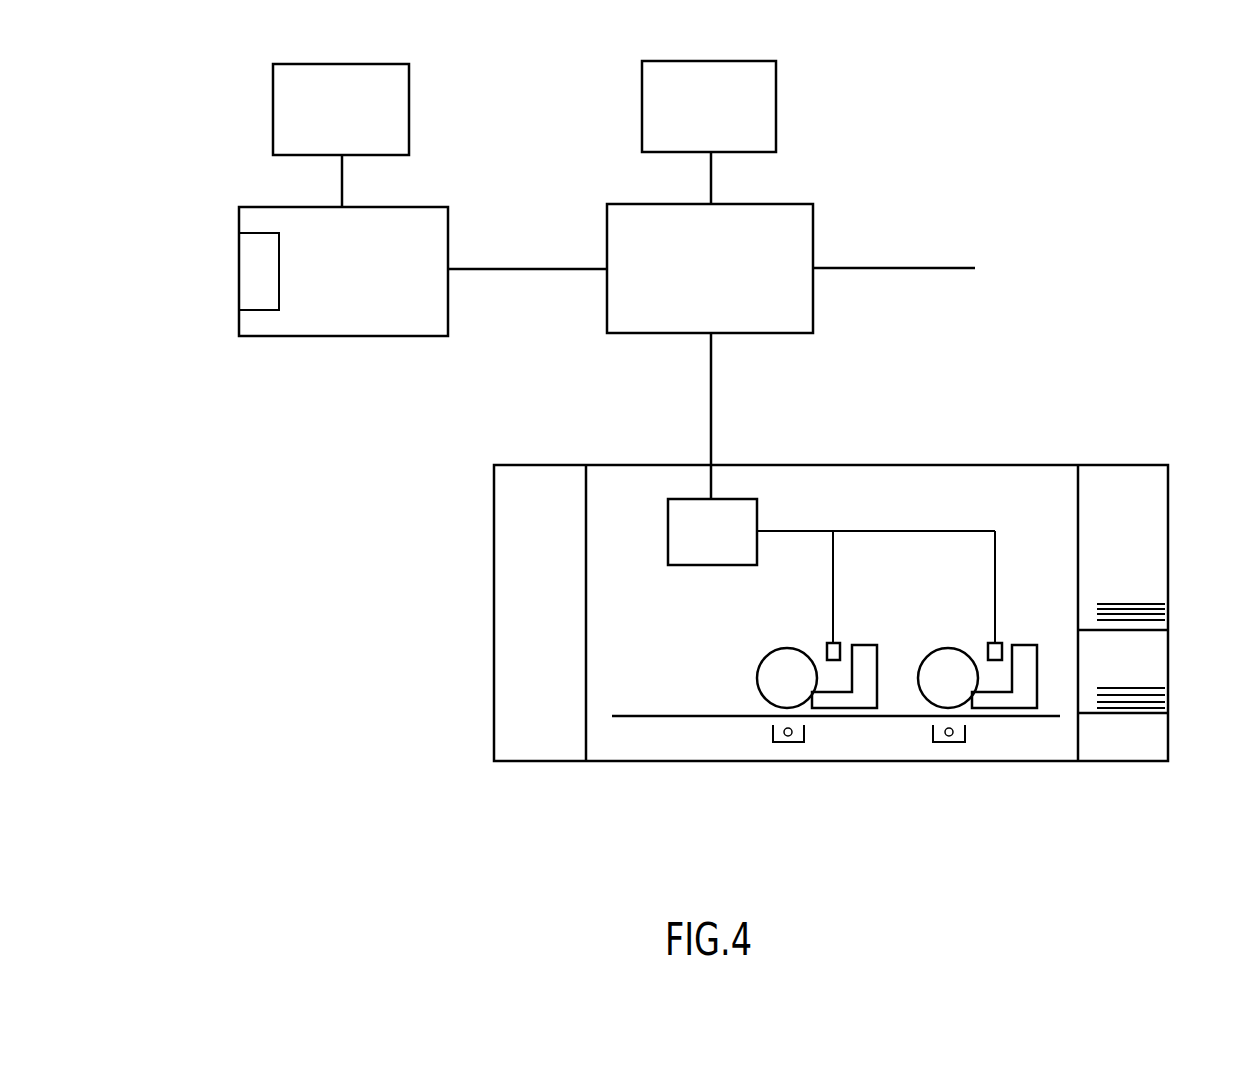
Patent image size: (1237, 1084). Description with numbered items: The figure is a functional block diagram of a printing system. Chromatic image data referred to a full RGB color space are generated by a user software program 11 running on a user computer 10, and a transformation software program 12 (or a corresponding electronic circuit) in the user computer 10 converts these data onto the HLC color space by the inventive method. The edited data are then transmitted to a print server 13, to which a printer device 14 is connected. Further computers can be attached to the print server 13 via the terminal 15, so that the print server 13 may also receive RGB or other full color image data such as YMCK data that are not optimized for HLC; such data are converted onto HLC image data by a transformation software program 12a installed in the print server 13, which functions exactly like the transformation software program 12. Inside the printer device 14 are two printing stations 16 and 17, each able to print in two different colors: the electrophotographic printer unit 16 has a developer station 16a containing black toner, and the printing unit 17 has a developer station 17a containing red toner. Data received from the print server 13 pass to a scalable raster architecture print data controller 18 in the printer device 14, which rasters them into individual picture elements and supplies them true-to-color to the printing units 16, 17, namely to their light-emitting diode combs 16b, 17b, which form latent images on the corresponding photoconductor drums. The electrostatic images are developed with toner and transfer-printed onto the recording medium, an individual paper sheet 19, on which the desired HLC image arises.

The user computer 10 is at (323, 328).
The user software program 11 is at (246, 278).
The transformation software program 12 is at (400, 134).
The transformation software program 12a is at (770, 130).
The print server 13 is at (800, 222).
The printer device 14 is at (639, 750).
The terminal 15 is at (955, 268).
The printing station 16 is at (931, 690).
The developer station 16a is at (1030, 645).
The light-emitting diode comb 16b is at (988, 643).
The printing station 17 is at (763, 673).
The developer station 17a is at (868, 645).
The light-emitting diode comb 17b is at (827, 643).
The scalable raster architecture (SRA) print data controller 18 is at (680, 507).
The paper sheet 19 is at (1148, 690).